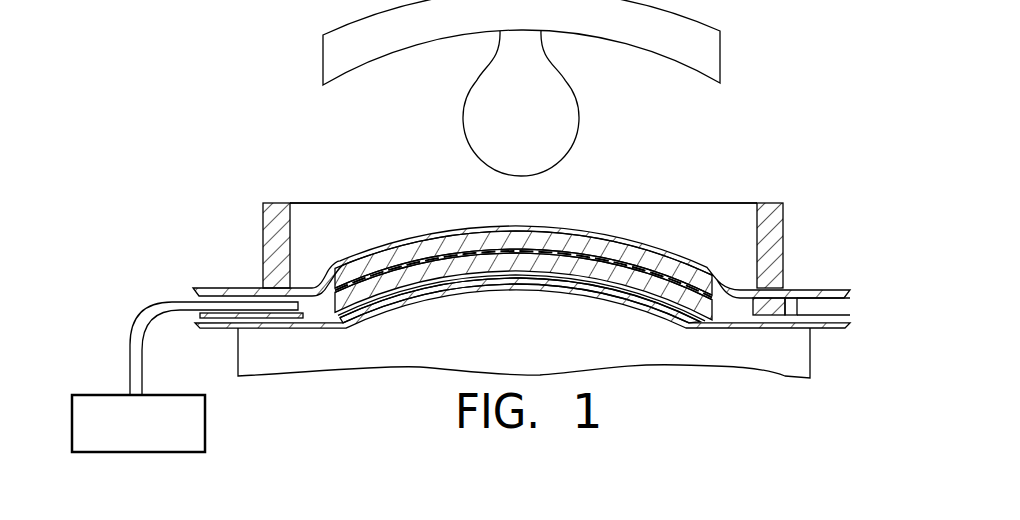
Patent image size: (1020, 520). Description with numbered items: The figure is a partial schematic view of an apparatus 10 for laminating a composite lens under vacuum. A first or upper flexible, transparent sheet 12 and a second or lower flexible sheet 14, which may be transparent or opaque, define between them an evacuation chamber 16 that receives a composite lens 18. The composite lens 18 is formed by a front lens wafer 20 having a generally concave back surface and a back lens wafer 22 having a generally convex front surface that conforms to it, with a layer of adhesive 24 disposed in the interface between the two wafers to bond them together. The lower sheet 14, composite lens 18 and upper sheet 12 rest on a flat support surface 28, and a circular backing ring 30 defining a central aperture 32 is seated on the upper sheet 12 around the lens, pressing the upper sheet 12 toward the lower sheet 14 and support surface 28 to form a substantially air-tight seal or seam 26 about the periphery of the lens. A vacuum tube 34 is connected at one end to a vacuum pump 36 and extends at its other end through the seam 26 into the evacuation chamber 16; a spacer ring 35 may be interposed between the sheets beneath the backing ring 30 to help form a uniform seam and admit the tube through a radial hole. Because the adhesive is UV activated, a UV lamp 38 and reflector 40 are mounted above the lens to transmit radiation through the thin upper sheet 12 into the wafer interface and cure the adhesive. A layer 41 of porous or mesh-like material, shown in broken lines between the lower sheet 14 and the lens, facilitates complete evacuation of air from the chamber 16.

The apparatus 10 is at (762, 112).
The upper flexible transparent sheet 12 is at (368, 252).
The lower flexible sheet 14 is at (571, 294).
The evacuation chamber 16 is at (317, 307).
The composite lens 18 is at (630, 300).
The front lens wafer 20 is at (556, 236).
The back lens wafer 22 is at (691, 299).
The layer of adhesive 24 is at (444, 264).
The air-tight seal or seam 26 is at (843, 307).
The flat support surface 28 is at (782, 352).
The backing ring 30 is at (775, 245).
The central aperture 32 is at (678, 236).
The vacuum tube 34 is at (141, 323).
The spacer ring 35 is at (762, 305).
The vacuum pump 36 is at (207, 434).
The UV lamp 38 is at (582, 118).
The reflector 40 is at (368, 62).
The layer of porous or mesh-like material 41 is at (512, 283).